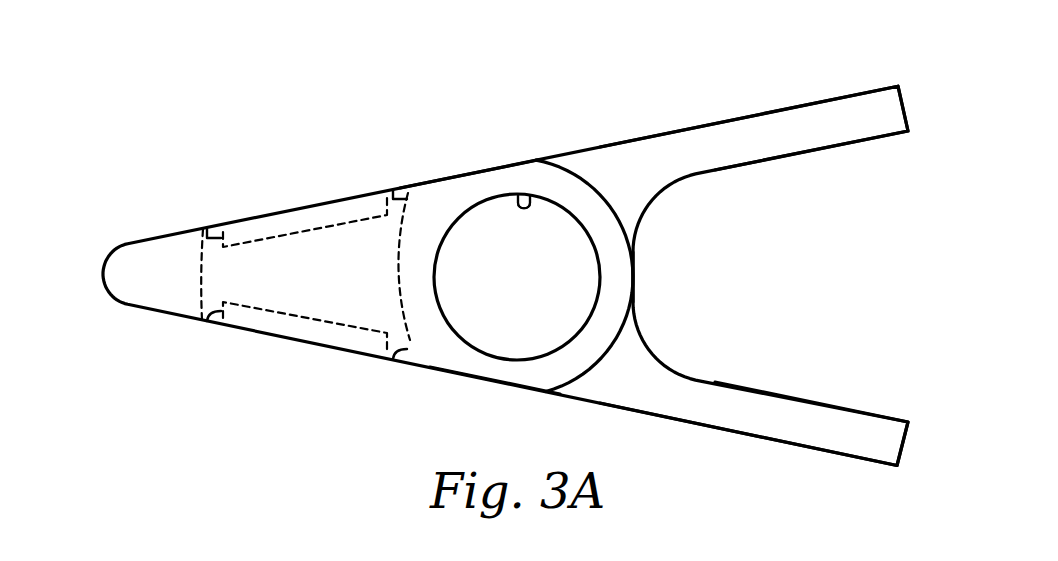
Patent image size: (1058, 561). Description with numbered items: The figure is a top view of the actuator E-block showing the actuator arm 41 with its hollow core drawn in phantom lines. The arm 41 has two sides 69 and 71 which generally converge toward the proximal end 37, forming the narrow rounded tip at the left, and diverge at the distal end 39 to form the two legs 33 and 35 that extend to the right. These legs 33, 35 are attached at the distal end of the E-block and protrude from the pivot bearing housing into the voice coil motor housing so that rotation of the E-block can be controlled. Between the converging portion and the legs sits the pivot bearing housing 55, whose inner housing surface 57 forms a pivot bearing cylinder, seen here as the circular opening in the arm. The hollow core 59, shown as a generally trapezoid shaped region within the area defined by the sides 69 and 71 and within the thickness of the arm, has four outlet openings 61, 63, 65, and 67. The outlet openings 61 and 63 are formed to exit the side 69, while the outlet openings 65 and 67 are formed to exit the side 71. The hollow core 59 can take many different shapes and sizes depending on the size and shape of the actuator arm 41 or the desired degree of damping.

The leg 33 is at (805, 104).
The leg 35 is at (765, 440).
The proximal end 37 is at (106, 228).
The distal end 39 is at (636, 262).
The actuator arm 41 is at (436, 194).
The pivot bearing housing 55 is at (600, 364).
The inner housing surface 57 is at (528, 204).
The hollow core 59 is at (312, 283).
The outlet opening 61 is at (393, 359).
The outlet opening 63 is at (207, 321).
The outlet opening 65 is at (207, 229).
The outlet opening 67 is at (393, 190).
The side 69 is at (490, 378).
The side 71 is at (497, 173).